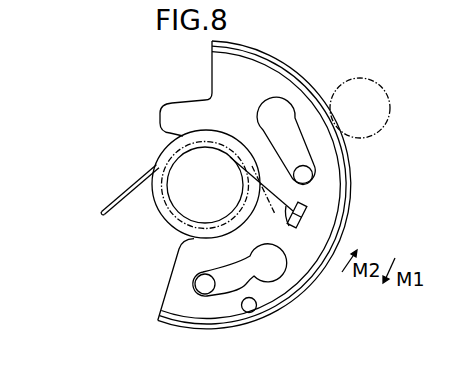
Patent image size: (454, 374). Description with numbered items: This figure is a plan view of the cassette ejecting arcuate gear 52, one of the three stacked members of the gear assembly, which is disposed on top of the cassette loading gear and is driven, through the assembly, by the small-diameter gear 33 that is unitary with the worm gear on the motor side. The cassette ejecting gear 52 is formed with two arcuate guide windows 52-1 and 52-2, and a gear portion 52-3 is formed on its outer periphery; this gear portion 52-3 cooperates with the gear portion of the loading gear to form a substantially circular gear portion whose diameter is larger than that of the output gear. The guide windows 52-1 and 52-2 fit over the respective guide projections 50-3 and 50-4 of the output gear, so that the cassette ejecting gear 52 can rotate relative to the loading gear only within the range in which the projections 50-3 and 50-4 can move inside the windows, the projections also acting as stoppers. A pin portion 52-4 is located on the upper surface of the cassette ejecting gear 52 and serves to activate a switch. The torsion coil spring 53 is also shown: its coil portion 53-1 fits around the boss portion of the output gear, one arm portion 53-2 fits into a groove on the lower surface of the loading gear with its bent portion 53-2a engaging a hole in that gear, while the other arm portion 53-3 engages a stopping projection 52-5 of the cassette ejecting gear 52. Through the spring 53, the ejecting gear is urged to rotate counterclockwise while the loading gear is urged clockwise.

The cassette ejecting arcuate gear 52 is at (322, 45).
The arcuate guide window 52-1 is at (313, 155).
The arcuate guide window 52-2 is at (247, 284).
The gear portion 52-3 is at (343, 226).
The pin portion 52-4 is at (254, 310).
The stopping projection 52-5 is at (304, 207).
The guide projection 50-3 is at (312, 177).
The guide projection 50-4 is at (197, 278).
The small-diameter gear 33 is at (384, 104).
The torsion coil spring 53 is at (157, 164).
The coil portion 53-1 is at (162, 192).
The arm portion 53-2 is at (145, 177).
The bent portion 53-2a is at (102, 214).
The arm portion 53-3 is at (290, 222).